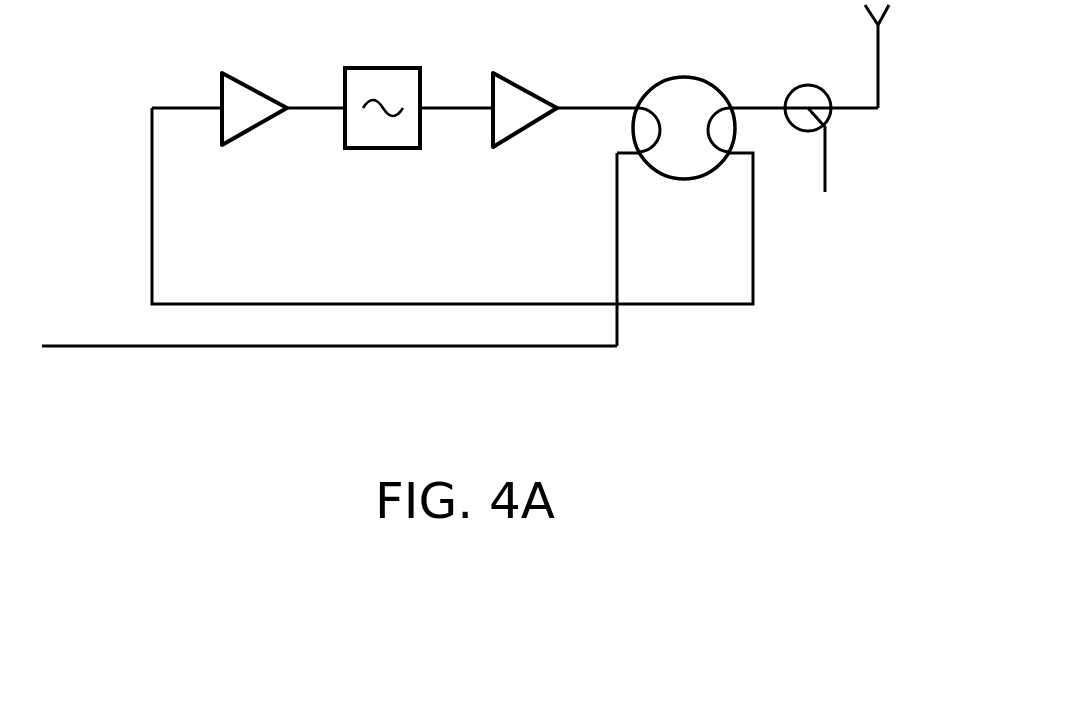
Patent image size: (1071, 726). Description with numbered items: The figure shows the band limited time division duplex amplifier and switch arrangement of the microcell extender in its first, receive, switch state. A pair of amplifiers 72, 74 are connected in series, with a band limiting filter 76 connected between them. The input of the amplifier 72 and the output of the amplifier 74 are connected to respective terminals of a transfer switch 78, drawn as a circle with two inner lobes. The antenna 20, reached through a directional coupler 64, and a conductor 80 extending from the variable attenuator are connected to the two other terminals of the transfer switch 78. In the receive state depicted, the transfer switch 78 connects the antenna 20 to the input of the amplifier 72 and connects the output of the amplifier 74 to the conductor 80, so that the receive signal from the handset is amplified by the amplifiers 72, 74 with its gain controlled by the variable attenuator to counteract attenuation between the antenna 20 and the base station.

The amplifier 72 is at (255, 129).
The band limiting filter 76 is at (385, 149).
The amplifier 74 is at (522, 130).
The transfer switch 78 is at (641, 66).
The directional coupler 64 is at (800, 87).
The antenna 20 is at (878, 40).
The conductor 80 is at (367, 348).